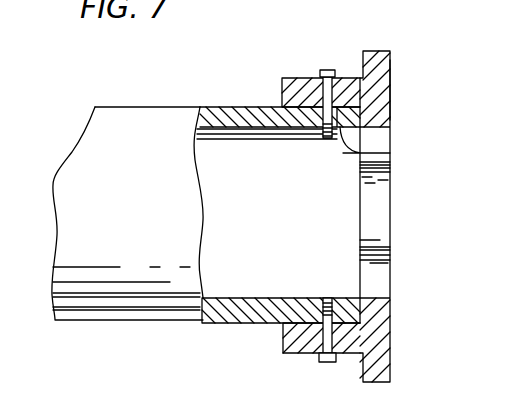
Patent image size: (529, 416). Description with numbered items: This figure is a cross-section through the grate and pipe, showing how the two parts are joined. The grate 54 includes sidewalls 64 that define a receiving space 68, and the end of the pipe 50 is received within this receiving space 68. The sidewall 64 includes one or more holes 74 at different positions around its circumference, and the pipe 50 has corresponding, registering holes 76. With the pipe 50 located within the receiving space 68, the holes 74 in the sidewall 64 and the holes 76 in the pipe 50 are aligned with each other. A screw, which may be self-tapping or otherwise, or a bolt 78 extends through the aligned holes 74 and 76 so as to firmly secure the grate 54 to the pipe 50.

The pipe 50 is at (140, 228).
The grate 54 is at (387, 138).
The sidewall 64 is at (290, 90).
The receiving space 68 is at (390, 153).
The hole 74 is at (390, 90).
The hole 76 is at (323, 128).
The bolt 78 is at (328, 70).